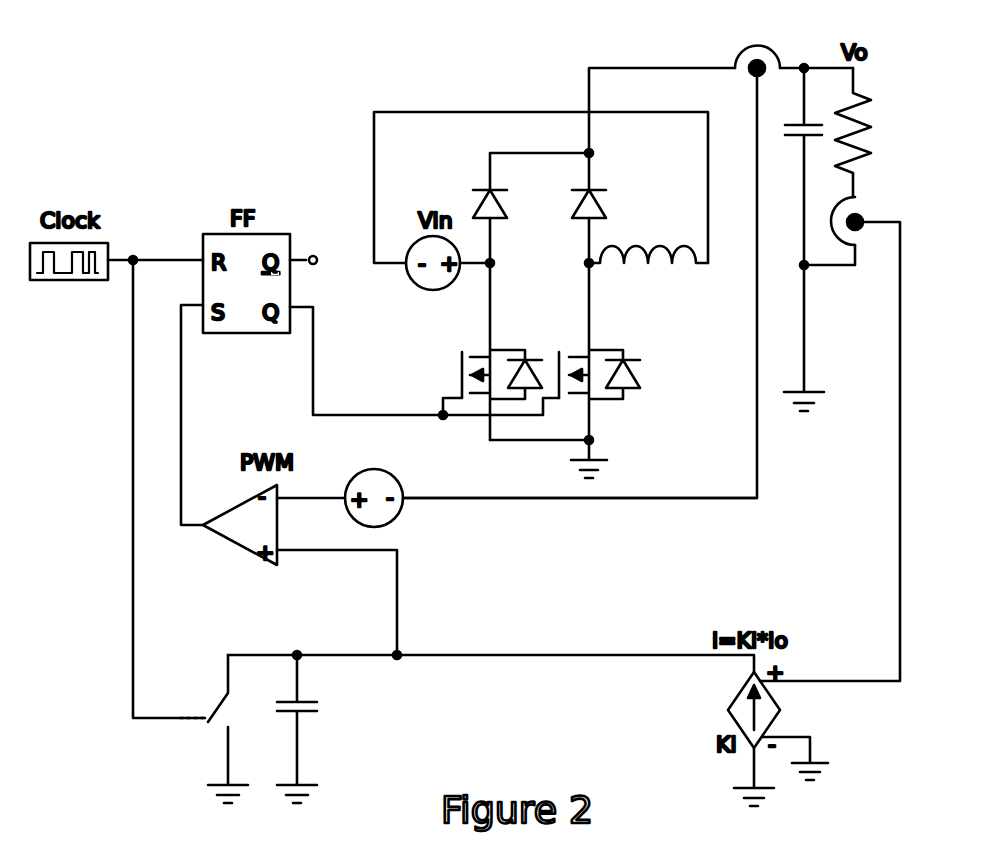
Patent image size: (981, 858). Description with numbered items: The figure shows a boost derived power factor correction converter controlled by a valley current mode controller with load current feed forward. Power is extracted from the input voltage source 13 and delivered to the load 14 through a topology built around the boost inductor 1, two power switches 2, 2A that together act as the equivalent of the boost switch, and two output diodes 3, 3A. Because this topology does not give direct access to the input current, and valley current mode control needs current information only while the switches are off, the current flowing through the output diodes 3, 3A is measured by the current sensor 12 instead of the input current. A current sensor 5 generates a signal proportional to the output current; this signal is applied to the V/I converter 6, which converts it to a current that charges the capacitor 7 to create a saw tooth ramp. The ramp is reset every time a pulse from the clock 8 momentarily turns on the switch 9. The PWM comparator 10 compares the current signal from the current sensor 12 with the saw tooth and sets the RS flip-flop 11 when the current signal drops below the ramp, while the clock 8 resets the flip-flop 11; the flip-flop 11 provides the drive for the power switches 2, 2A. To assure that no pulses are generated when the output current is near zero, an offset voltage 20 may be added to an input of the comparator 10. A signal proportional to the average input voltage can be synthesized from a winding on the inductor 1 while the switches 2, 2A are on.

The boost inductor 1 is at (685, 245).
The power switch 2 is at (495, 358).
The power switch 2A is at (595, 358).
The output diode 3 is at (477, 207).
The output diode 3A is at (573, 205).
The current sensor 5 is at (863, 238).
The V/I converter 6 is at (780, 717).
The capacitor 7 is at (310, 716).
The clock 8 is at (58, 281).
The switch 9 is at (208, 738).
The PWM comparator 10 is at (233, 512).
The RS flip-flop 11 is at (203, 243).
The current sensor 12 is at (730, 56).
The input voltage source 13 is at (450, 284).
The load 14 is at (878, 136).
The offset voltage 20 is at (393, 520).